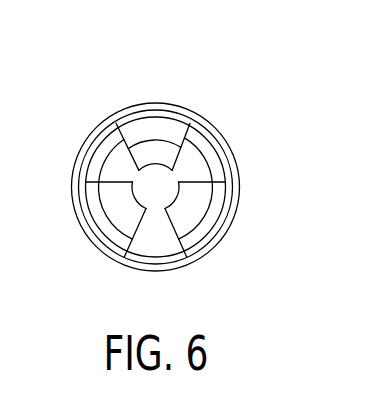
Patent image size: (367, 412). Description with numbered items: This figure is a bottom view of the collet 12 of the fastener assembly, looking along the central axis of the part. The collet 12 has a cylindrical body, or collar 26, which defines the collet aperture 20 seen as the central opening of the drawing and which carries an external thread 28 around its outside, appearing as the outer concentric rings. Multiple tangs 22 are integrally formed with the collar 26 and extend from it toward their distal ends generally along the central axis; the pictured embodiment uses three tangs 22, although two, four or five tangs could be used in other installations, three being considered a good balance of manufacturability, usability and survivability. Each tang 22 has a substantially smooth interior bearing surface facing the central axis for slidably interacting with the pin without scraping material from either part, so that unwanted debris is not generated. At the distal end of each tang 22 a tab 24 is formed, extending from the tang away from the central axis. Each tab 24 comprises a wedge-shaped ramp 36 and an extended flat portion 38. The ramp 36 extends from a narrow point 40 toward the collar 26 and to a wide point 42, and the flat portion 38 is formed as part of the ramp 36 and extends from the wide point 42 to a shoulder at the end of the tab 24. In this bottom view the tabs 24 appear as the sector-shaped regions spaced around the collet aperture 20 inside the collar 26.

The collet 12 is at (223, 86).
The collet aperture 20 is at (113, 168).
The tangs 22 is at (213, 240).
The tab 24 is at (218, 211).
The collar 26 is at (216, 167).
The external thread 28 is at (212, 131).
The wedge-shaped ramp 36 is at (110, 200).
The extended flat portion 38 is at (106, 222).
The narrow point 40 is at (116, 123).
The wide point 42 is at (171, 127).